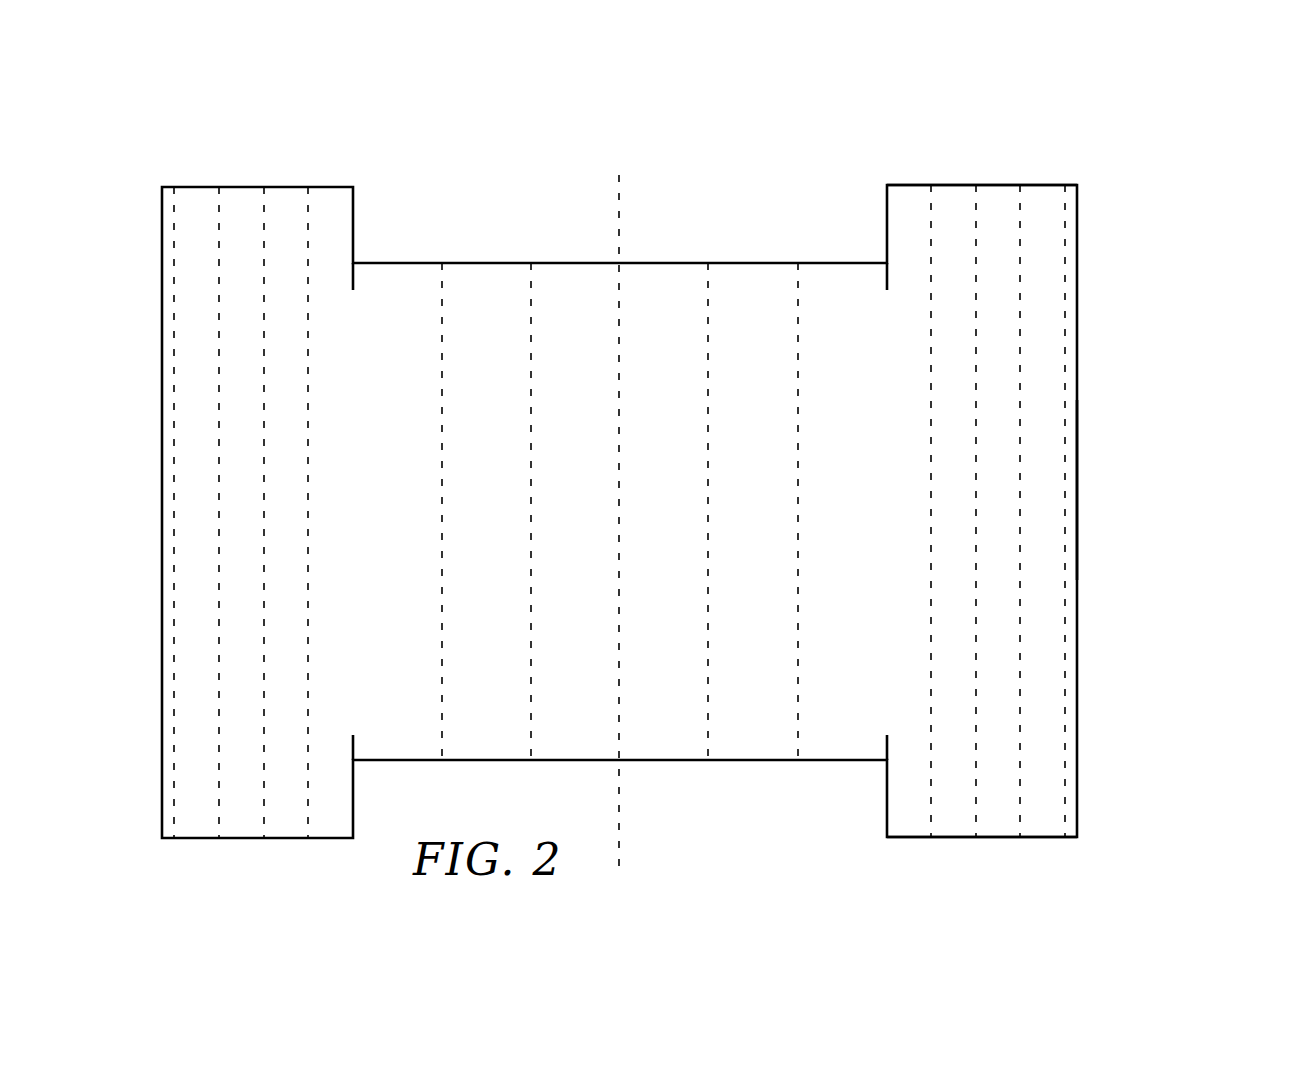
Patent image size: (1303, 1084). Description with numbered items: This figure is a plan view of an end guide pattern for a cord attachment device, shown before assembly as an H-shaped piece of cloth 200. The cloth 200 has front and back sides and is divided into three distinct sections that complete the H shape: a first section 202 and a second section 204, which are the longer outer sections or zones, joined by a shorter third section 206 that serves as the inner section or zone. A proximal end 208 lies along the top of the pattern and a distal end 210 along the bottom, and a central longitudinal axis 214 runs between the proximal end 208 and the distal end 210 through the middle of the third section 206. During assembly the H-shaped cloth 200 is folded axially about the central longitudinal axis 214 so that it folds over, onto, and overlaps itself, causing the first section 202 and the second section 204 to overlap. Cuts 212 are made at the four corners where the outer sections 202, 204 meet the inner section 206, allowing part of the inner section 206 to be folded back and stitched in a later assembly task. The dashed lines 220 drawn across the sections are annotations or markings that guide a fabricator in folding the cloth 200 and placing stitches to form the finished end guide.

The H-shaped cloth 200 is at (1086, 135).
The first section 202 is at (257, 481).
The second section 204 is at (982, 479).
The third section 206 is at (619, 439).
The proximal end 208 is at (1086, 178).
The distal end 210 is at (1086, 841).
The cuts 212 is at (353, 284).
The central longitudinal axis 214 is at (620, 204).
The dashed lines 220 is at (931, 528).